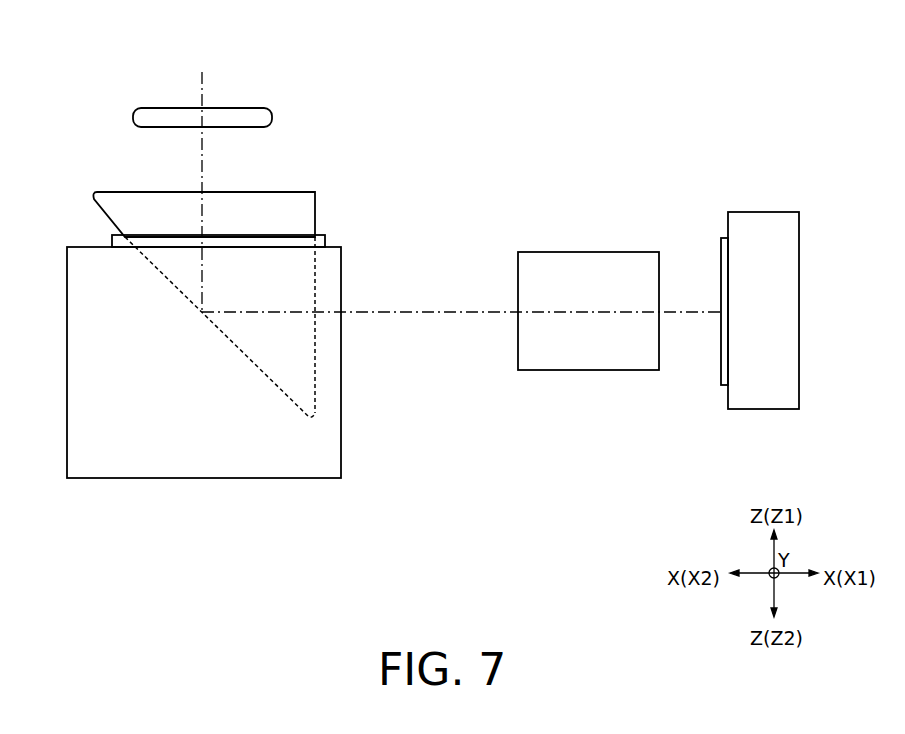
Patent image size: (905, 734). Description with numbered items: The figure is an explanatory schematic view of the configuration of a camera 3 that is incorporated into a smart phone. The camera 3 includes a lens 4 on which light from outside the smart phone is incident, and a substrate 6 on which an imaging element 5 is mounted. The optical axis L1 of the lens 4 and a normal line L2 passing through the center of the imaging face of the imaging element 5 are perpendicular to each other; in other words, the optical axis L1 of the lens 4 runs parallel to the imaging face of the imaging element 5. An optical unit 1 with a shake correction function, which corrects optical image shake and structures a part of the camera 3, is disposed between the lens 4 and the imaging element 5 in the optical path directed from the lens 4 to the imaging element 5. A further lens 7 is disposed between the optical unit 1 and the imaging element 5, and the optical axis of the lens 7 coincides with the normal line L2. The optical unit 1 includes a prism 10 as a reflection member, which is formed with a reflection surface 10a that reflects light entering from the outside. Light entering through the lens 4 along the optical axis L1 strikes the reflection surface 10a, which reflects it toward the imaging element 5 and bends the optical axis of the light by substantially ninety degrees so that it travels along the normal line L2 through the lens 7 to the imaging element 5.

The optical unit 1 is at (67, 351).
The camera 3 is at (543, 80).
The lens 4 is at (272, 118).
The imaging element 5 is at (725, 237).
The substrate 6 is at (763, 212).
The lens 7 is at (588, 252).
The prism 10 is at (318, 210).
The reflection surface 10a is at (233, 341).
The optical axis L1 is at (187, 85).
The normal line L2 is at (448, 313).